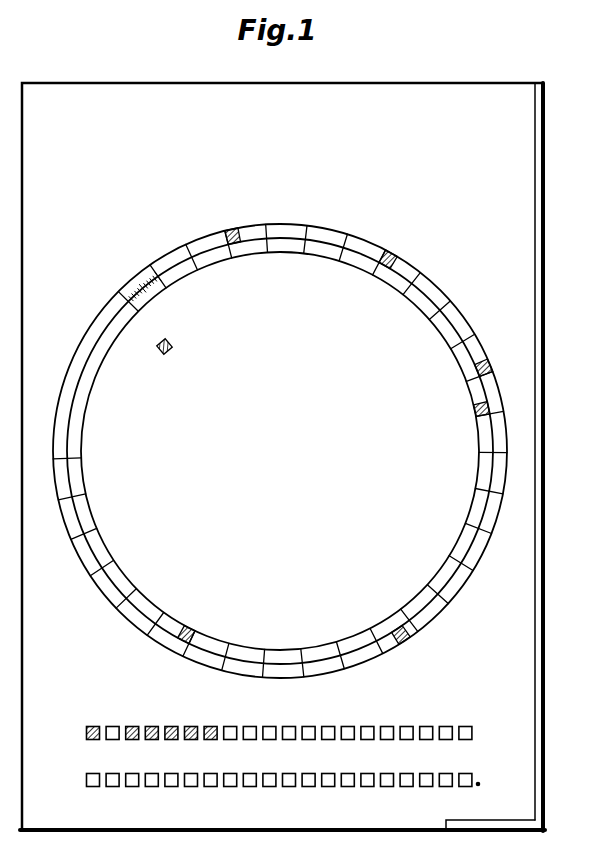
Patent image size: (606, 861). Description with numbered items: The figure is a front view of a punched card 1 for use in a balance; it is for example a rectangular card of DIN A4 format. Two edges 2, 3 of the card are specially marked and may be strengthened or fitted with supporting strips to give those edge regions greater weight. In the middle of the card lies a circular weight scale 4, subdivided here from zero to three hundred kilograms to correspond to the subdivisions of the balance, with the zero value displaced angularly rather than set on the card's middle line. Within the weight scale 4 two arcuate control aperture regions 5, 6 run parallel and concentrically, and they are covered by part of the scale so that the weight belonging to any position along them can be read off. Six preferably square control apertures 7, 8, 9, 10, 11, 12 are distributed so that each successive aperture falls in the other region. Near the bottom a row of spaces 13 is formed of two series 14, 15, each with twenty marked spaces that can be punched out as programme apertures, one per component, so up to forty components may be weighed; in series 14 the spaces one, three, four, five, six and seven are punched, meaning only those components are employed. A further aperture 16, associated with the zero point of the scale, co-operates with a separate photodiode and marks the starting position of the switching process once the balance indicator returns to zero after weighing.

The punched card 1 is at (527, 109).
The edge 2 is at (538, 201).
The edge 3 is at (483, 832).
The circular weight scale 4 is at (131, 283).
The control aperture region 5 is at (85, 513).
The control aperture region 6 is at (83, 552).
The control aperture 7 is at (233, 232).
The control aperture 8 is at (389, 264).
The control aperture 9 is at (489, 367).
The control aperture 10 is at (477, 403).
The control aperture 11 is at (407, 637).
The control aperture 12 is at (188, 630).
The row of spaces 13 is at (338, 744).
The series 14 is at (290, 726).
The series 15 is at (329, 787).
The further aperture 16 is at (172, 348).